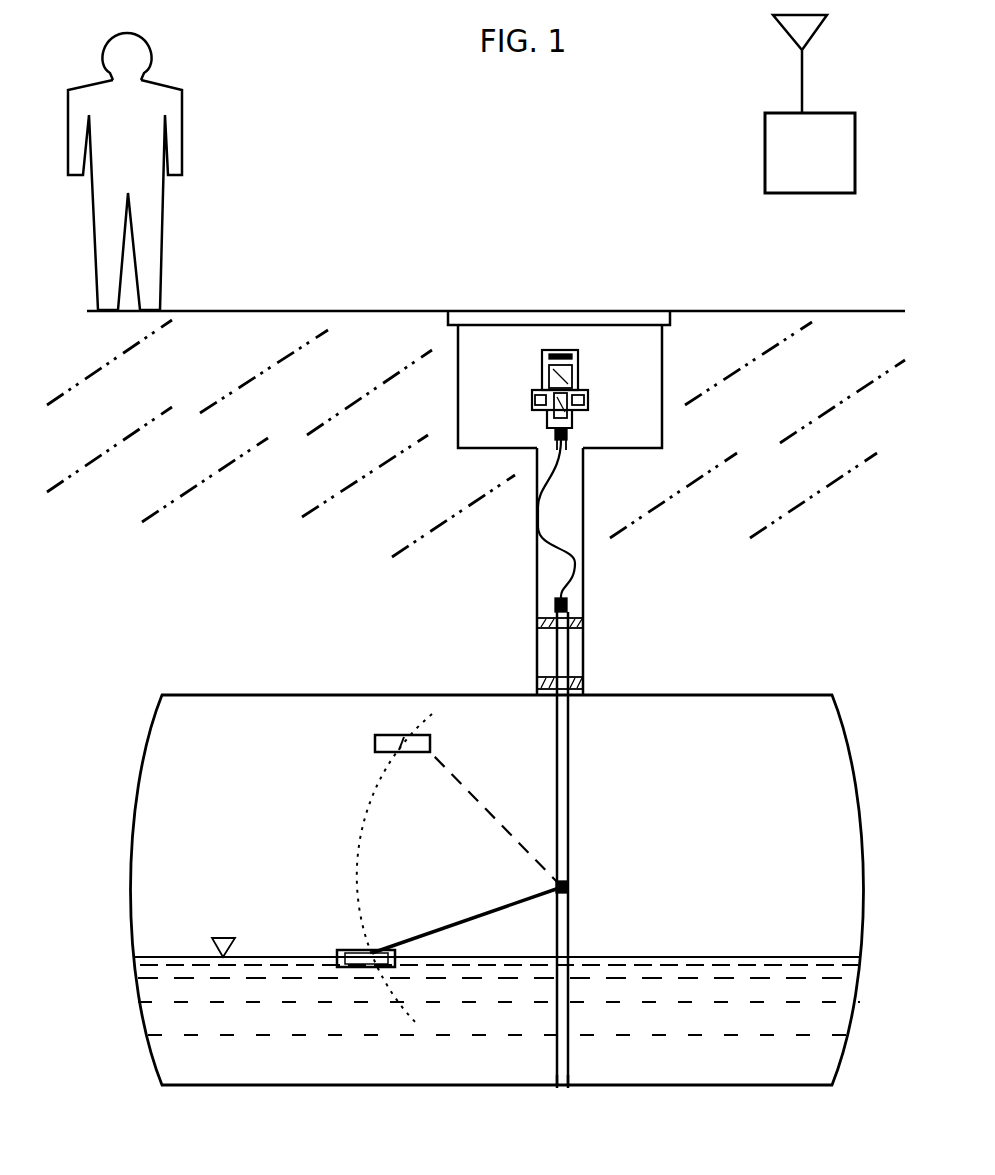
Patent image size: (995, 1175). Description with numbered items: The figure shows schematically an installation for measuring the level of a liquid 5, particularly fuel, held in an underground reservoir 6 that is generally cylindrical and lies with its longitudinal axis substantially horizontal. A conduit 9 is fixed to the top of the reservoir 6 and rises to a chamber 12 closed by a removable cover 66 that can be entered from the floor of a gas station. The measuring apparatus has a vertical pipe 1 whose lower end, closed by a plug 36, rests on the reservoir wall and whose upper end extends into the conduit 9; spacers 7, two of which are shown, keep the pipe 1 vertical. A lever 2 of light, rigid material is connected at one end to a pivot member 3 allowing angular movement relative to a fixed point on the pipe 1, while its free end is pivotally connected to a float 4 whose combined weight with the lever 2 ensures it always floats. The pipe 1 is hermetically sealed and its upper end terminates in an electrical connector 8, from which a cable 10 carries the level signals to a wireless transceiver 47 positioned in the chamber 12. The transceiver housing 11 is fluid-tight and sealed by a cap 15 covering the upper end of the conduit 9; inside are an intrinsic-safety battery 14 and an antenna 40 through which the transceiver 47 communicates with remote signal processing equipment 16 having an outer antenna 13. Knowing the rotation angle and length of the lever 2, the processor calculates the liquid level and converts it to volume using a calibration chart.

The vertical pipe 1 is at (568, 802).
The lever 2 is at (483, 912).
The pivot member 3 is at (568, 887).
The float 4 is at (356, 948).
The liquid 5 is at (497, 986).
The reservoir 6 is at (362, 697).
The spacers 7 is at (537, 676).
The electrical connector 8 is at (566, 598).
The conduit 9 is at (583, 508).
The cable 10 is at (537, 527).
The housing 11 is at (542, 372).
The chamber 12 is at (647, 355).
The outer antenna 13 is at (802, 55).
The battery 14 is at (566, 405).
The cap 15 is at (530, 398).
The remote signal processing equipment 16 is at (810, 153).
The plug 36 is at (568, 1080).
The antenna 40 is at (556, 351).
The wireless transceiver 47 is at (563, 380).
The removable cover 66 is at (518, 315).